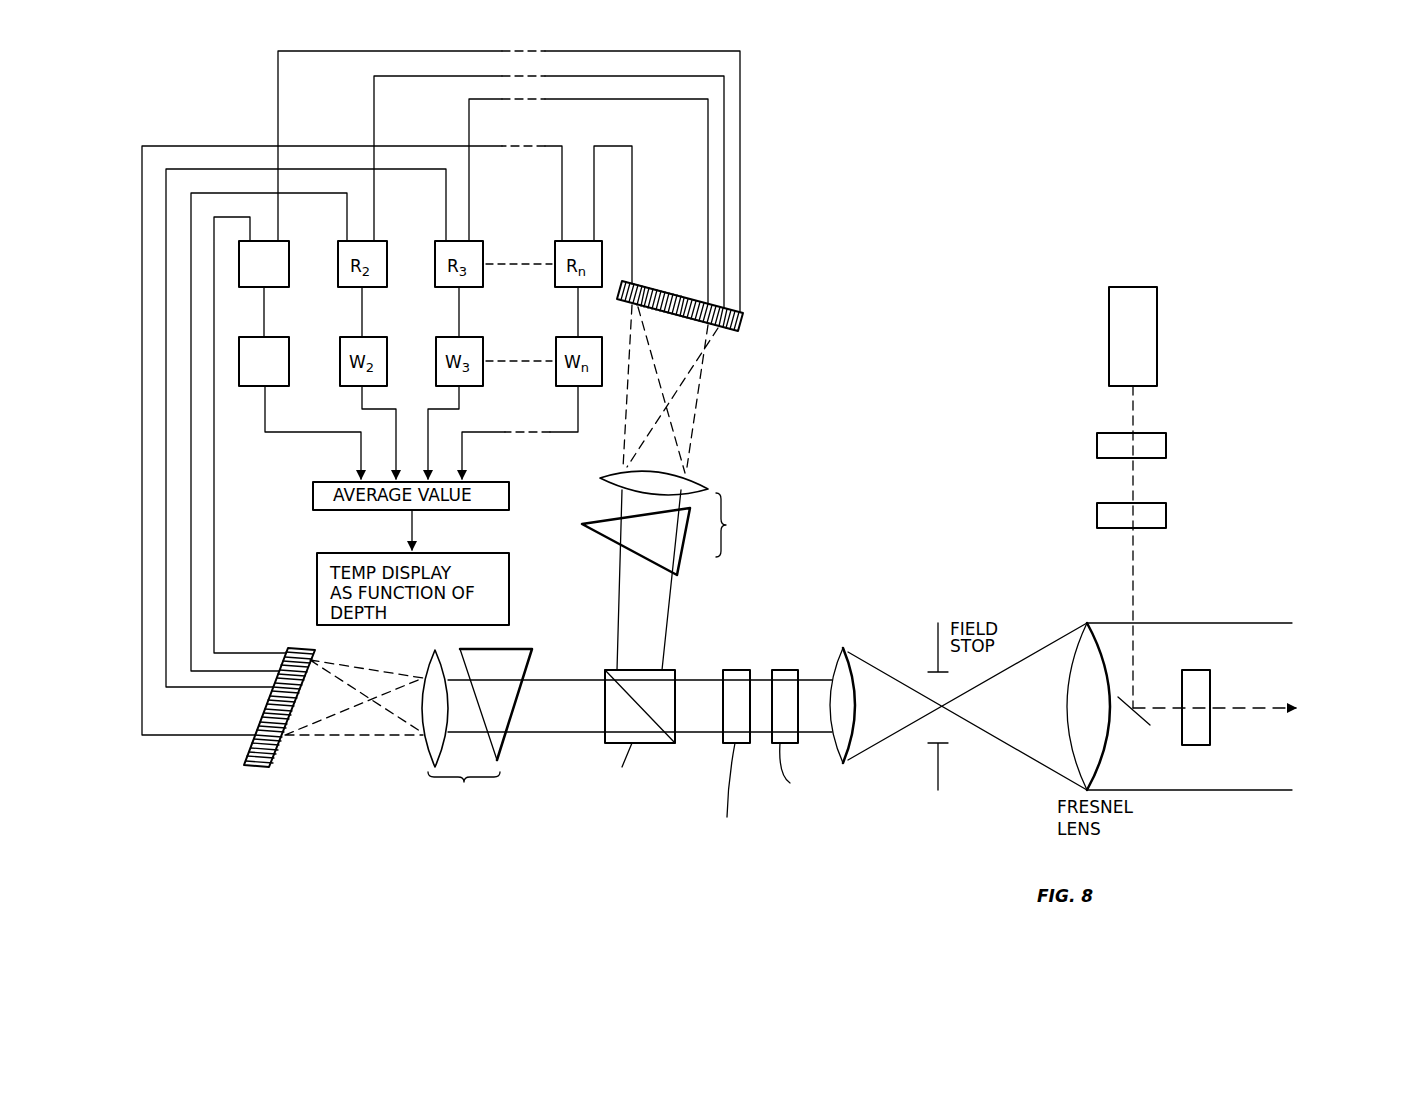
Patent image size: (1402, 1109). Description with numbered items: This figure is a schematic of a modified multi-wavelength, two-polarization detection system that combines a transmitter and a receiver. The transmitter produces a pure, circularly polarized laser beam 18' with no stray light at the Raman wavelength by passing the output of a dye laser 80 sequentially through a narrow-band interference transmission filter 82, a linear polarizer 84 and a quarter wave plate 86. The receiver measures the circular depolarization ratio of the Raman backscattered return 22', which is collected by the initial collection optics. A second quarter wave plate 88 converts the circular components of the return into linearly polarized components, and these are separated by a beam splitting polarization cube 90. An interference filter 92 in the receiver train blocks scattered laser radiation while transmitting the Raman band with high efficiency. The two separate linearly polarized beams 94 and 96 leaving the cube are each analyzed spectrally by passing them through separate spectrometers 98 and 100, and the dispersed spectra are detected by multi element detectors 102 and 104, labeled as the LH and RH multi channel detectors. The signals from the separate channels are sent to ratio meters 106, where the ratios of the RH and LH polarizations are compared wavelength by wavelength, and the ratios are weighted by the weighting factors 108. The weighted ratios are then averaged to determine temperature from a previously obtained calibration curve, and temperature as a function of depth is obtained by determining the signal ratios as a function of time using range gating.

The dye laser 80 is at (1160, 295).
The narrow-band interference transmission filter 82 is at (1158, 432).
The linear polarizer 84 is at (1107, 500).
The quarter wave plate 86 is at (1198, 670).
The second quarter wave plate 88 is at (785, 670).
The beam splitting polarization cube 90 is at (605, 743).
The interference filter 92 is at (737, 670).
The linearly polarized beam 94 is at (582, 678).
The linearly polarized beam 96 is at (615, 602).
The spectrometer 98 is at (468, 812).
The spectrometer 100 is at (738, 497).
The multi element detector 102 is at (300, 645).
The multi element detector 104 is at (747, 312).
The ratio meters 106 is at (290, 250).
The weighting factors 108 is at (290, 348).
The circularly polarized laser beam 18' is at (1214, 684).
The Raman backscattered return 22' is at (1196, 679).